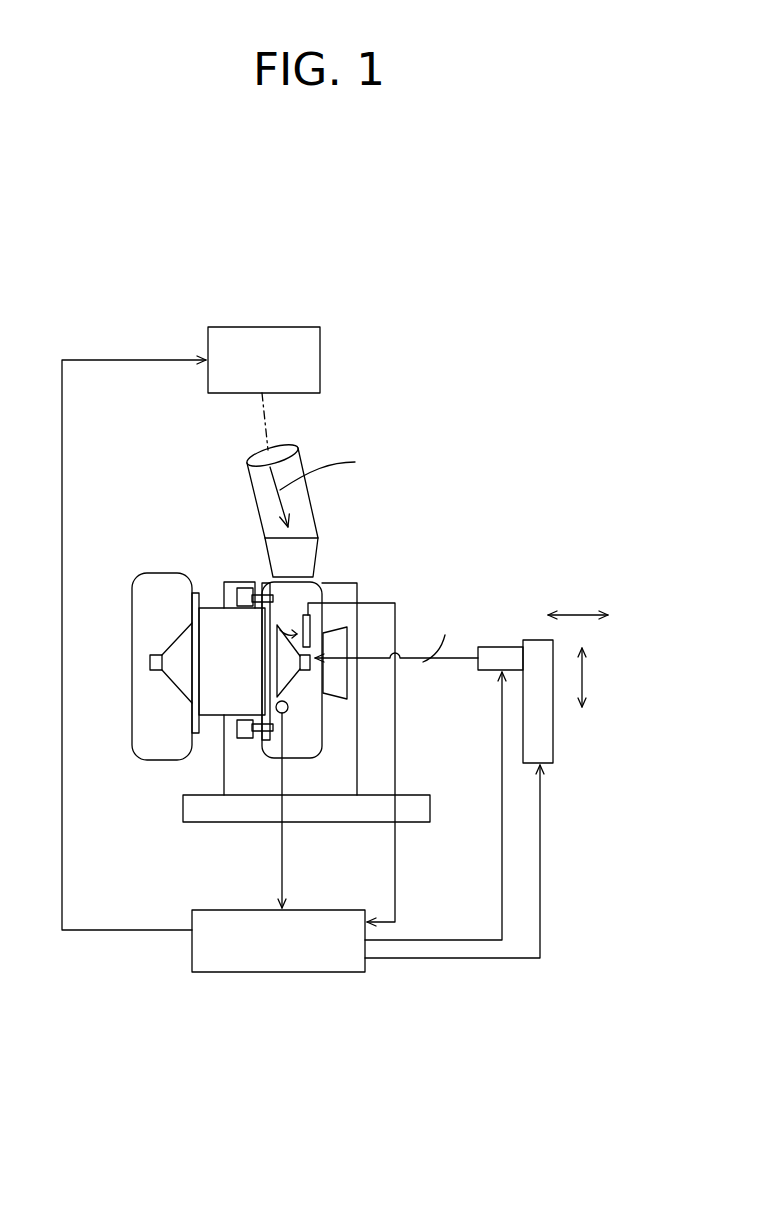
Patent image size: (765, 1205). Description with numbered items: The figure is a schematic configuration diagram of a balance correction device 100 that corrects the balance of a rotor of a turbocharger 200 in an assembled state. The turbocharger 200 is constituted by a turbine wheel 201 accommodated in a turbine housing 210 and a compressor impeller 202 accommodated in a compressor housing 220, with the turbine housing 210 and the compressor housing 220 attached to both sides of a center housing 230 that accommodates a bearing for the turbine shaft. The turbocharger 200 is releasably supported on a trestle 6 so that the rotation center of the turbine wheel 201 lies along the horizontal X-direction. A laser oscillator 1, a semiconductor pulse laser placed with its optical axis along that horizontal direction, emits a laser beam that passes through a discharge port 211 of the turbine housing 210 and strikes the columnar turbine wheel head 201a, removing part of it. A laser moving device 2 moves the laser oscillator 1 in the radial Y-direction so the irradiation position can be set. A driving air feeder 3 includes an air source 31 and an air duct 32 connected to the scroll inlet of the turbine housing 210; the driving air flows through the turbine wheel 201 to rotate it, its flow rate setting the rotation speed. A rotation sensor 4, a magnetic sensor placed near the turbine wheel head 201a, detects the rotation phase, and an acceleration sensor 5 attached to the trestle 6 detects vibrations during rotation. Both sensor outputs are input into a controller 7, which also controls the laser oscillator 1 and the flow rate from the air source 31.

The balance correction device 100 is at (353, 280).
The laser oscillator 1 is at (498, 653).
The laser moving device 2 is at (548, 745).
The driving air feeder 3 is at (368, 465).
The air source 31 is at (228, 327).
The air duct 32 is at (318, 515).
The rotation sensor 4 is at (314, 713).
The acceleration sensor 5 is at (279, 713).
The trestle 6 is at (306, 802).
The controller 7 is at (290, 972).
The turbocharger 200 is at (190, 671).
The turbine wheel 201 is at (268, 582).
The turbine wheel head 201a is at (313, 685).
The compressor impeller 202 is at (172, 632).
The turbine housing 210 is at (318, 594).
The discharge port 211 is at (350, 698).
The compressor housing 220 is at (143, 760).
The center housing 230 is at (216, 600).